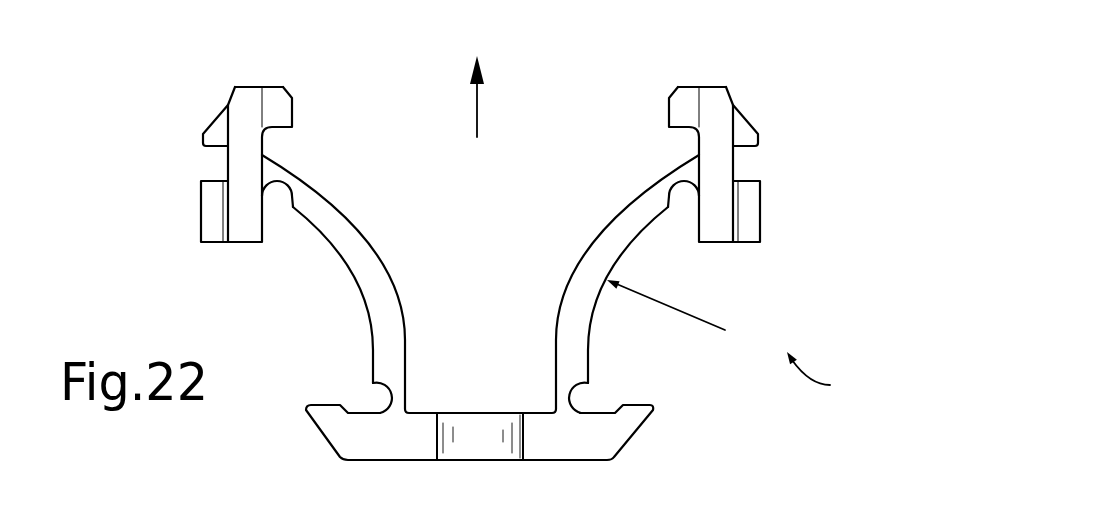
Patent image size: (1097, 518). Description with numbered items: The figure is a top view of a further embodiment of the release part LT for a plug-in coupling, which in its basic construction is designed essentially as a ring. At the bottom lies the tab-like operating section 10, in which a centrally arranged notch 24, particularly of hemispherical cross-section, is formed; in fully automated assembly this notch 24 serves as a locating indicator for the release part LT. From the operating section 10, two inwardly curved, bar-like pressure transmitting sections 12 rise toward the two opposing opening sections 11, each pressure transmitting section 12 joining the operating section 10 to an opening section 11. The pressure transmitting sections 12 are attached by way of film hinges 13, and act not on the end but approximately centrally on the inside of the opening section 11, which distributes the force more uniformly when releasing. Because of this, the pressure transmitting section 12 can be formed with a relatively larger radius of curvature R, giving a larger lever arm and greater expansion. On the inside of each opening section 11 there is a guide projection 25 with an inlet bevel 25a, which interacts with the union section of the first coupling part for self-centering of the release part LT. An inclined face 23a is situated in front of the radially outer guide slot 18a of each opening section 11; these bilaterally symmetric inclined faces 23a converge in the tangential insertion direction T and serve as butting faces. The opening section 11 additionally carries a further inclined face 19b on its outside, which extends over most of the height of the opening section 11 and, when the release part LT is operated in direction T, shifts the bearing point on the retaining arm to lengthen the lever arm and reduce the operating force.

The operating section 10 is at (563, 445).
The notch 24 is at (463, 450).
The opening section 11 is at (245, 228).
The pressure transmitting section 12 is at (368, 280).
The film hinge 13 is at (295, 182).
The guide slot 18a is at (210, 176).
The inclined face 19b is at (222, 103).
The inclined face 23a is at (213, 116).
The guide projection 25 is at (286, 100).
The inlet bevel 25a is at (284, 86).
The tangential insertion direction T is at (477, 105).
The radius of curvature R is at (703, 322).
The release part LT is at (830, 378).